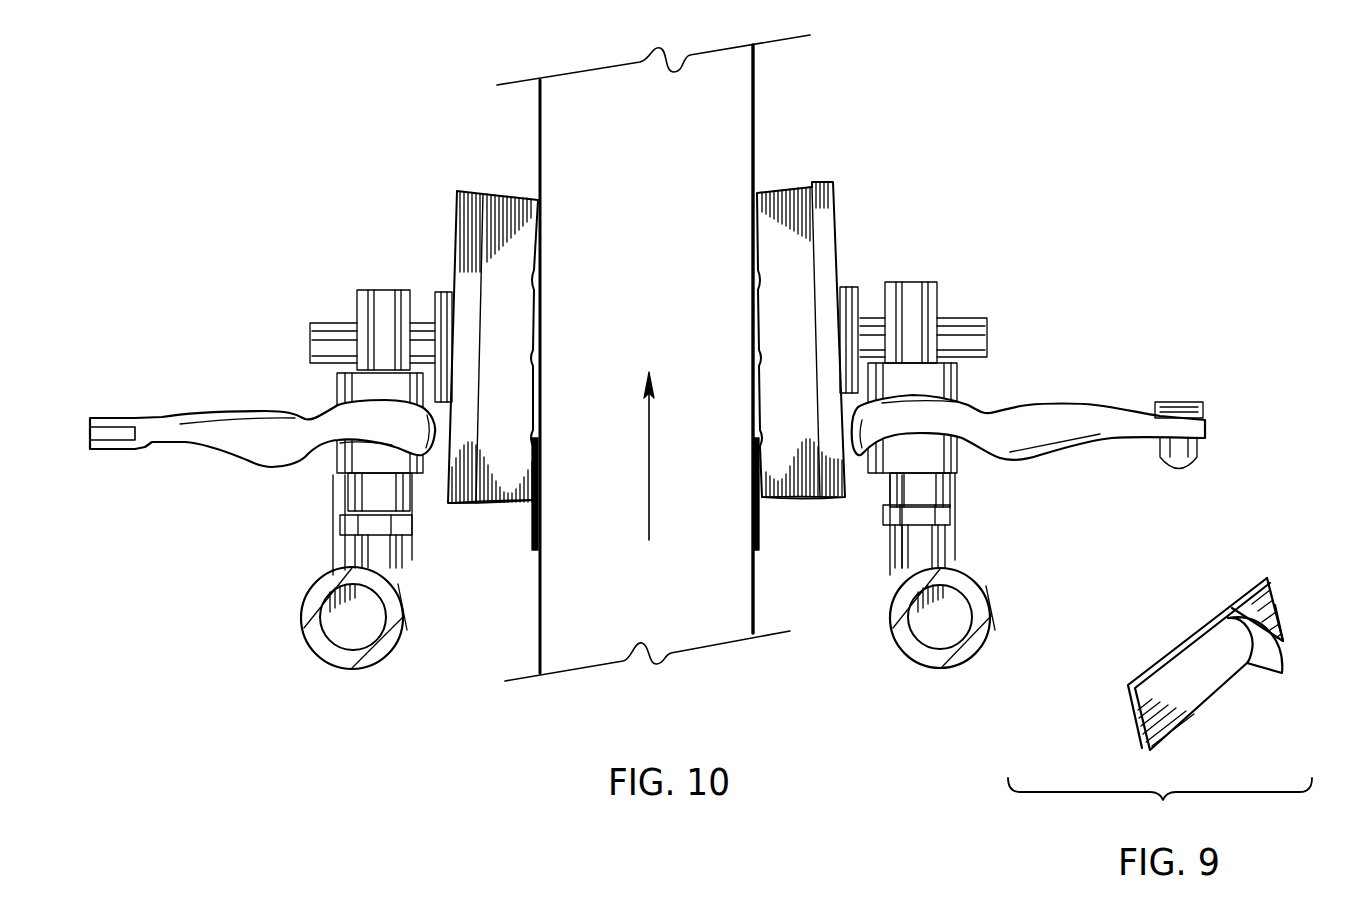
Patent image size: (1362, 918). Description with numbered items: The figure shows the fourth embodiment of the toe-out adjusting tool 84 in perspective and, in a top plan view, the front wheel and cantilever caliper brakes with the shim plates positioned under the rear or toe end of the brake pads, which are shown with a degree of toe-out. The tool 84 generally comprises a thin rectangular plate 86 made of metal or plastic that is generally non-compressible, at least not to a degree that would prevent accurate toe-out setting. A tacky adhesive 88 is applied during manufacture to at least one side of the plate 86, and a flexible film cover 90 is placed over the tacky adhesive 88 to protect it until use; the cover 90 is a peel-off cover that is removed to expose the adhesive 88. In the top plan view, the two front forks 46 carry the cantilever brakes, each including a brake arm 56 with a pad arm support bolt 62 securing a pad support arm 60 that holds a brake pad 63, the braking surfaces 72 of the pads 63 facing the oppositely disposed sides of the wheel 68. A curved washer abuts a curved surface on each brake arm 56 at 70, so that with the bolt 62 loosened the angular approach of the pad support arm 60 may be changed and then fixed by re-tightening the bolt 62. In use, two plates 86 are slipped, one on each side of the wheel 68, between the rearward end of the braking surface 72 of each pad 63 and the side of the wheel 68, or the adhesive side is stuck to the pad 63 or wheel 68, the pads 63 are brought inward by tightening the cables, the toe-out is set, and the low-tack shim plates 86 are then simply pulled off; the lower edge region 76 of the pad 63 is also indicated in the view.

In FIG. 10, the front forks 46 is at (302, 632).
In FIG. 10, the brake arms 56 is at (207, 455).
In FIG. 10, the pad support arms 60 is at (308, 333).
In FIG. 10, the pad arm support bolts 62 is at (380, 290).
In FIG. 10, the brake pads 63 is at (513, 195).
In FIG. 10, the wheel 68 is at (756, 100).
In FIG. 10, the curved surface on brake arm 70 is at (383, 398).
In FIG. 10, the braking surfaces 72 is at (750, 298).
In FIG. 10, the roller bottom edge 76 is at (497, 505).
In FIG. 9, the tool 84 is at (1163, 640).
In FIG. 10, the thin rectangular plate 86 is at (530, 553).
In FIG. 9, the thin rectangular plate 86 is at (1282, 628).
In FIG. 9, the tacky adhesive 88 is at (1256, 612).
In FIG. 9, the flexible film cover 90 is at (1272, 668).